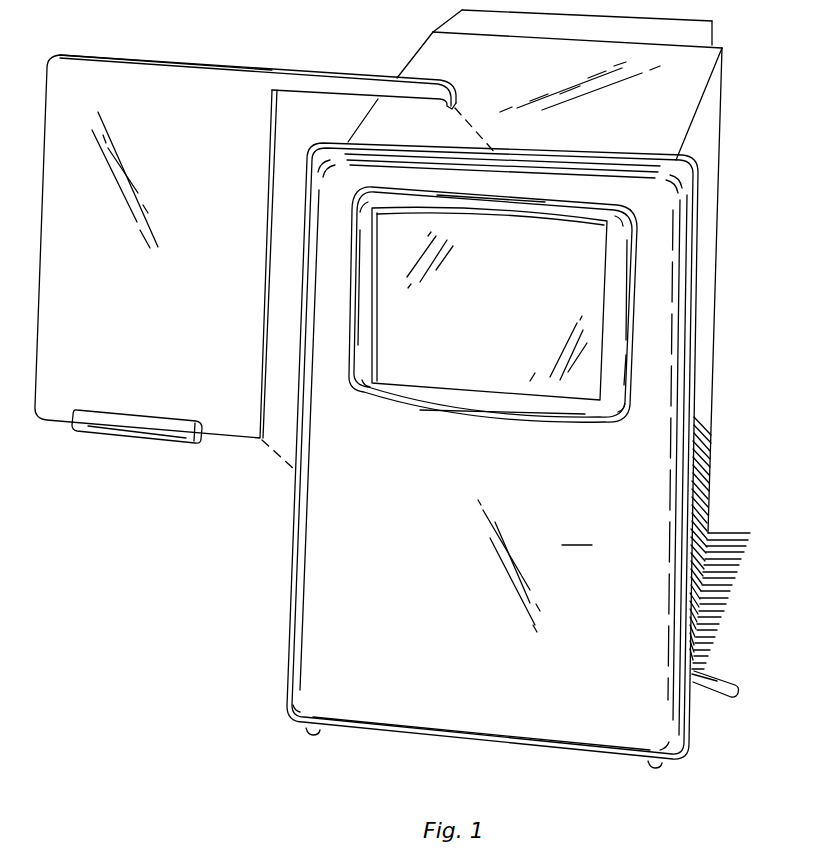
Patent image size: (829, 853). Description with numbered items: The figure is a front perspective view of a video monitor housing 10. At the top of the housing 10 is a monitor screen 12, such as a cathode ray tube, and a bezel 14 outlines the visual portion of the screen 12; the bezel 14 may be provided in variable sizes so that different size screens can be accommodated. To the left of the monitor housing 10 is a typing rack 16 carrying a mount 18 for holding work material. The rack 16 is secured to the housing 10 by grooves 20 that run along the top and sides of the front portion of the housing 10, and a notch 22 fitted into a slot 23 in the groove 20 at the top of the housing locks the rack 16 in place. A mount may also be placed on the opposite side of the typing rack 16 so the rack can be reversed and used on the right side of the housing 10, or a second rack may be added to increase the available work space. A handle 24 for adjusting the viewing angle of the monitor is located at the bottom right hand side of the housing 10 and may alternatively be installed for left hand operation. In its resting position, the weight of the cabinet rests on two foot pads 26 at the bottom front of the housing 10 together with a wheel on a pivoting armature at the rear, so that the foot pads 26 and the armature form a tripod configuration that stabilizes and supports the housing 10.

The video monitor housing 10 is at (504, 384).
The monitor screen 12 is at (518, 298).
The bezel 14 is at (444, 398).
The typing rack 16 is at (163, 306).
The mount 18 is at (138, 418).
The grooves 20 is at (545, 158).
The notch 22 is at (457, 92).
The slot 23 is at (497, 155).
The handle 24 is at (718, 696).
The foot pads 26 is at (312, 737).